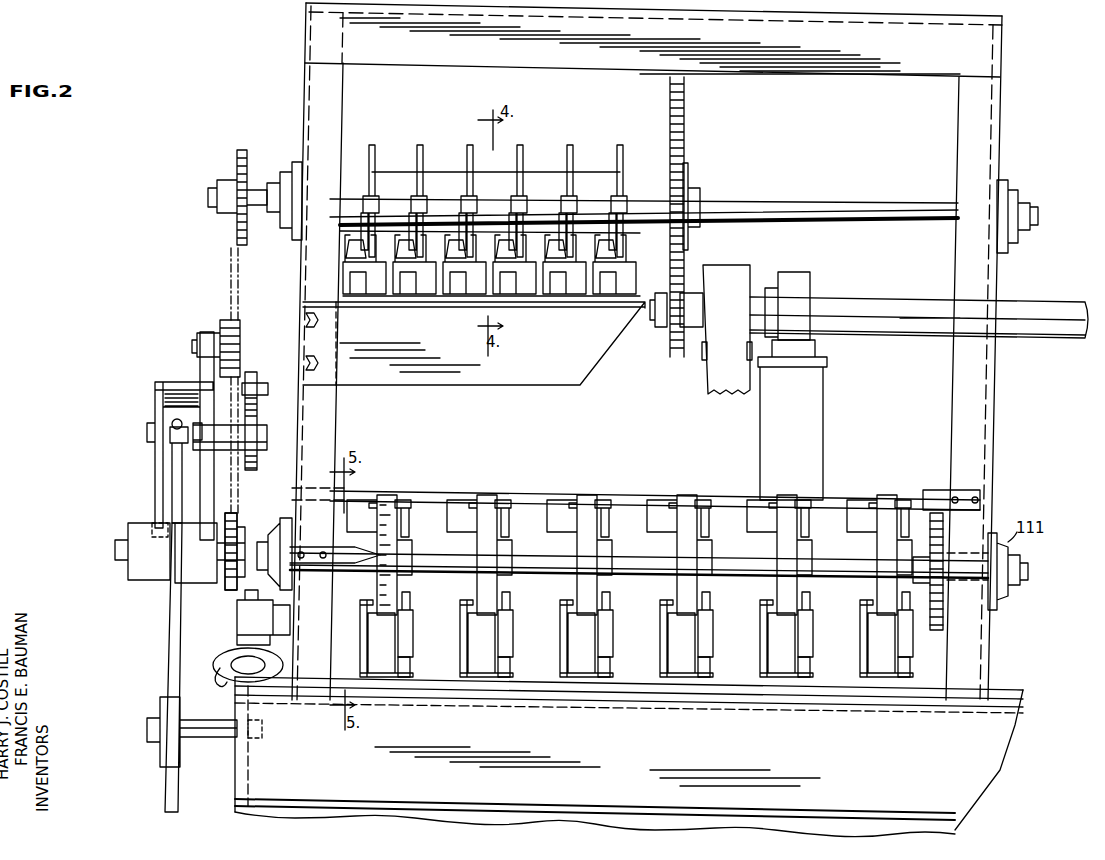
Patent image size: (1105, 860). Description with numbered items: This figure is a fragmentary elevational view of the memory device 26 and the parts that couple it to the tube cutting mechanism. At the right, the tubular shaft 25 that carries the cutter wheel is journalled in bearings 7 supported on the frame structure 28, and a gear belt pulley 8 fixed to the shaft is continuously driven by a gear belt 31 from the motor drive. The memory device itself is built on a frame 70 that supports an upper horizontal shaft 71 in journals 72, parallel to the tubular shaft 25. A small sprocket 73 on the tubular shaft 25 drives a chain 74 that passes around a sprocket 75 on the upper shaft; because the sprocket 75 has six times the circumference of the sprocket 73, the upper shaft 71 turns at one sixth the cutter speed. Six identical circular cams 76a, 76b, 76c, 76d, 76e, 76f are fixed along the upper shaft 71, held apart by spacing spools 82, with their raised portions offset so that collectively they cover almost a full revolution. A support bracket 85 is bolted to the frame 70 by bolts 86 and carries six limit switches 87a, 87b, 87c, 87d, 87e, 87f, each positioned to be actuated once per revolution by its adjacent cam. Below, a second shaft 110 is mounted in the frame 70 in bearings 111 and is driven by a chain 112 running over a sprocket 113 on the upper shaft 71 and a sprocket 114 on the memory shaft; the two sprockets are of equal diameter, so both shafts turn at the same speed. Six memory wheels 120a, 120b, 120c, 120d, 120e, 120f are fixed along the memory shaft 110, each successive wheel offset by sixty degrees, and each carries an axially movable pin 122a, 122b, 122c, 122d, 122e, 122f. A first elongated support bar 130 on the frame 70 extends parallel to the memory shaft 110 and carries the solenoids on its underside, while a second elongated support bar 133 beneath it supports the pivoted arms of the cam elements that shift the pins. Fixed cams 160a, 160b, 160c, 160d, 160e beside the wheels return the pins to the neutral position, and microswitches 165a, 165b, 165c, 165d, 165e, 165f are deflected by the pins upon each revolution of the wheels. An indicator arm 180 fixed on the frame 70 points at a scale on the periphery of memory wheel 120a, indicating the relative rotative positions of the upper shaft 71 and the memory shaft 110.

The bearings 7 is at (803, 275).
The gear belt pulley 8 is at (755, 270).
The tubular shaft 25 is at (1055, 307).
The memory device 26 is at (1027, 166).
The frame structure 28 is at (812, 410).
The gear belt 31 is at (704, 384).
The frame 70 is at (1010, 140).
The upper horizontal shaft 71 is at (812, 176).
The journals 72 is at (1016, 196).
The sprocket 73 is at (660, 330).
The chain 74 is at (690, 272).
The sprocket 75 is at (690, 175).
The circular cam 76a is at (377, 151).
The circular cam 76b is at (425, 151).
The circular cam 76c is at (467, 151).
The circular cam 76d is at (524, 151).
The circular cam 76e is at (574, 151).
The circular cam 76f is at (624, 151).
The spacing spools 82 is at (393, 182).
The support bracket 85 is at (505, 380).
The bolts 86 is at (310, 360).
The limit switch 87a is at (372, 288).
The limit switch 87b is at (427, 288).
The limit switch 87c is at (478, 288).
The limit switch 87d is at (524, 288).
The limit switch 87e is at (575, 288).
The limit switch 87f is at (624, 288).
The second shaft 110 is at (830, 580).
The bearings 111 is at (270, 532).
The chain 112 is at (240, 294).
The sprocket 113 is at (230, 166).
The sprocket 114 is at (222, 590).
The memory wheel 120a is at (385, 495).
The memory wheel 120b is at (488, 495).
The memory wheel 120c is at (587, 495).
The memory wheel 120d is at (685, 495).
The memory wheel 120e is at (788, 485).
The memory wheel 120f is at (890, 487).
The pin 122a is at (405, 500).
The pin 122b is at (505, 502).
The pin 122c is at (604, 502).
The pin 122d is at (704, 502).
The pin 122e is at (808, 503).
The pin 122f is at (904, 500).
The first elongated support bar 130 is at (563, 475).
The second elongated support bar 133 is at (553, 565).
The fixed cam 160a is at (364, 604).
The fixed cam 160b is at (464, 604).
The fixed cam 160c is at (564, 604).
The fixed cam 160d is at (664, 604).
The fixed cam 160e is at (762, 604).
The microswitch 165a is at (404, 645).
The microswitch 165b is at (504, 645).
The microswitch 165c is at (604, 645).
The microswitch 165d is at (704, 645).
The microswitch 165e is at (804, 645).
The microswitch 165f is at (904, 645).
The indicator arm 180 is at (365, 585).